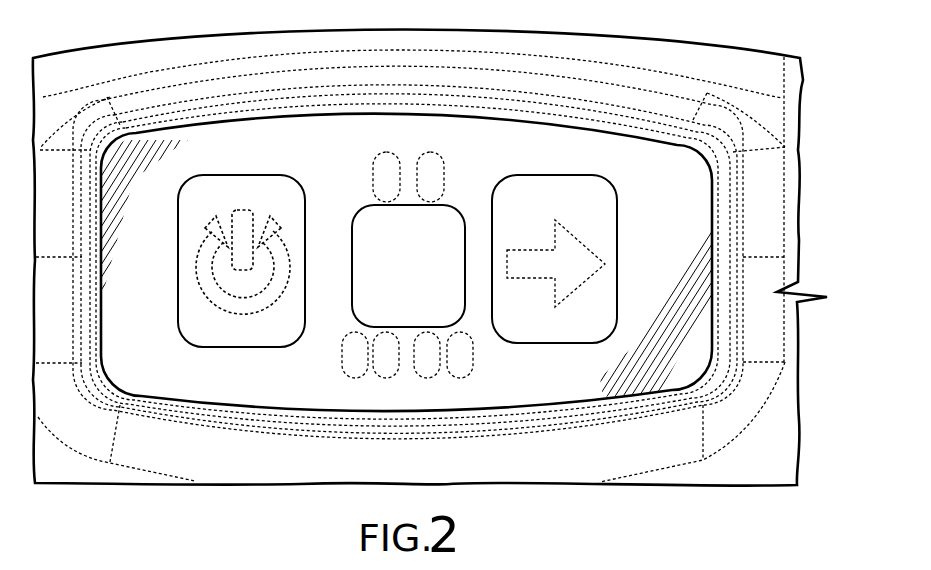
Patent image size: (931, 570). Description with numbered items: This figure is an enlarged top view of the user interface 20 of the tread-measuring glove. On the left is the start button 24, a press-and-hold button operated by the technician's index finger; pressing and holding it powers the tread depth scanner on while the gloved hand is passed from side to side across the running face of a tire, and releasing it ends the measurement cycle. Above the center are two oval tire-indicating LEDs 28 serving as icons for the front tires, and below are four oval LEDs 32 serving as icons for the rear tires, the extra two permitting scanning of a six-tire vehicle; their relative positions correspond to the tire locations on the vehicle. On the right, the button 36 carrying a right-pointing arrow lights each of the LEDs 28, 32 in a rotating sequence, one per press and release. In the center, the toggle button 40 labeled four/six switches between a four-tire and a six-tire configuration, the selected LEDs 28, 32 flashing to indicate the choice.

The user interface 20 is at (233, 152).
The start button 24 is at (282, 240).
The tire-indicating LEDs 28 is at (378, 176).
The LEDs 32 is at (350, 366).
The button 36 is at (580, 214).
The button 40 is at (450, 224).